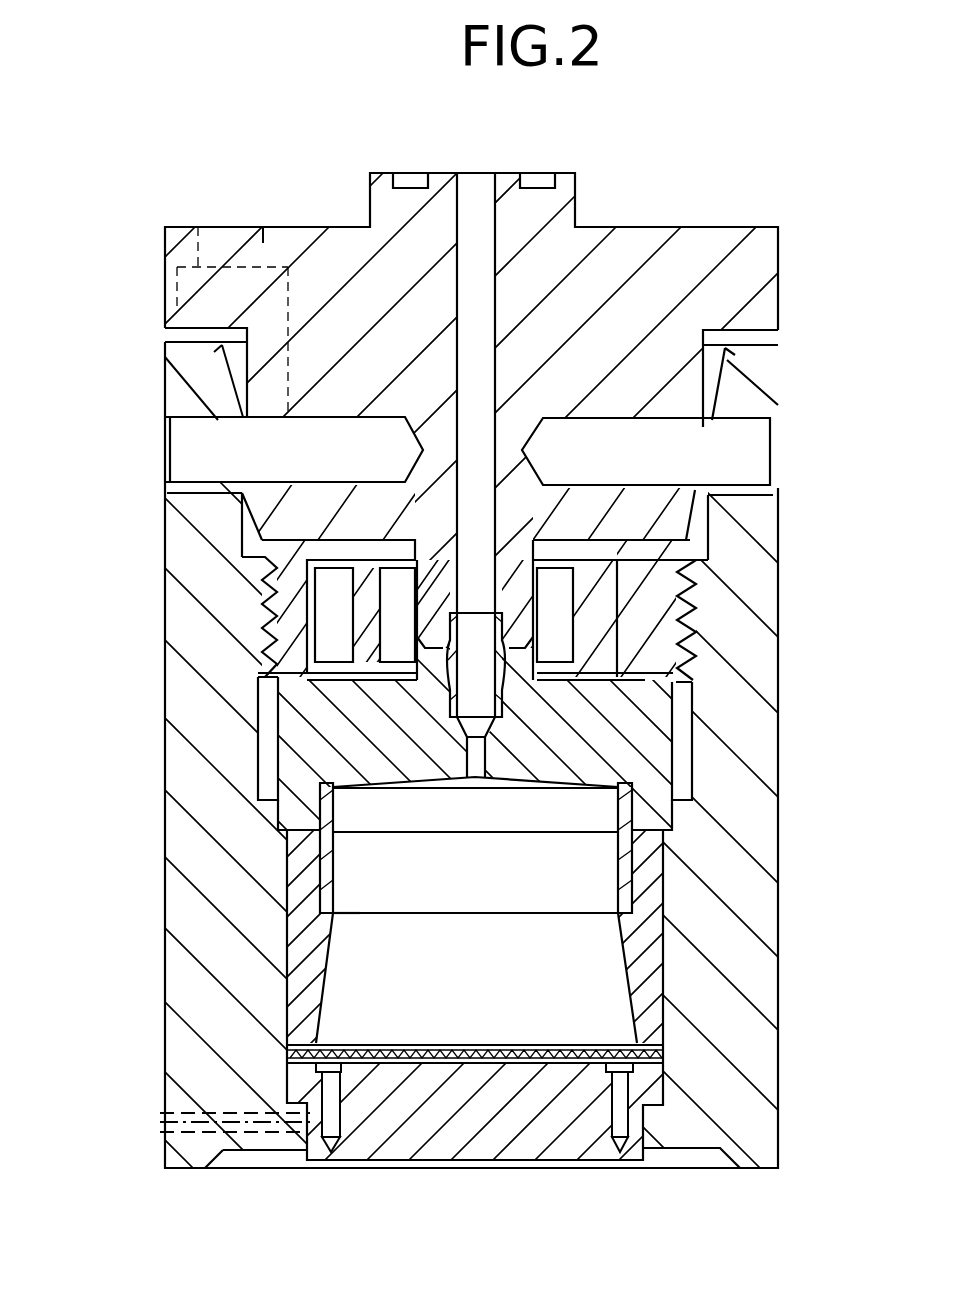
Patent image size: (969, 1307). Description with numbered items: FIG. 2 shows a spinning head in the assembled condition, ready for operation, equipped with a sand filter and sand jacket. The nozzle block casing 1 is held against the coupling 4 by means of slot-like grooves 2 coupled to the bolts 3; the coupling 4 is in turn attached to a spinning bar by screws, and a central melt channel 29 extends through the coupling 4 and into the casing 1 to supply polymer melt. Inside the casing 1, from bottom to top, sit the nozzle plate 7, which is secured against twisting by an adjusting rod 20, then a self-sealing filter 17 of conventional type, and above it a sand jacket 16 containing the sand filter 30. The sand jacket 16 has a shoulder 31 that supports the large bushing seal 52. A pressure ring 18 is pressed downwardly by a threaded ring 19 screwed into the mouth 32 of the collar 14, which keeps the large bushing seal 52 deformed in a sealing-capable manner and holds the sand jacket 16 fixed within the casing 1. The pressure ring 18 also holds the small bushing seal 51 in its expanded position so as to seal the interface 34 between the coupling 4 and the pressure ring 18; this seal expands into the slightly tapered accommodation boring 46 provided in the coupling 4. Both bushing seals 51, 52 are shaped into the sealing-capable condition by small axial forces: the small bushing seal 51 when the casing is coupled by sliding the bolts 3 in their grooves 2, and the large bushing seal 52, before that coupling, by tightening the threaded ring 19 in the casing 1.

The nozzle block casing 1 is at (182, 538).
The slot-like grooves 2 is at (187, 490).
The bolts 3 is at (187, 437).
The coupling 4 is at (285, 262).
The nozzle plate 7 is at (295, 1087).
The collar 14 is at (748, 405).
The sand jacket 16 is at (293, 960).
The self-sealing filter 17 is at (290, 1053).
The pressure ring 18 is at (287, 763).
The threaded ring 19 is at (282, 617).
The adjusting rod 20 is at (157, 1120).
The central melt channel 29 is at (473, 228).
The sand filter 30 is at (552, 994).
The shoulder 31 is at (333, 905).
The mouth 32 is at (712, 542).
The interface 34 is at (523, 648).
The accommodation boring 46 is at (460, 612).
The small bushing seal 51 is at (450, 697).
The large bushing seal 52 is at (323, 868).